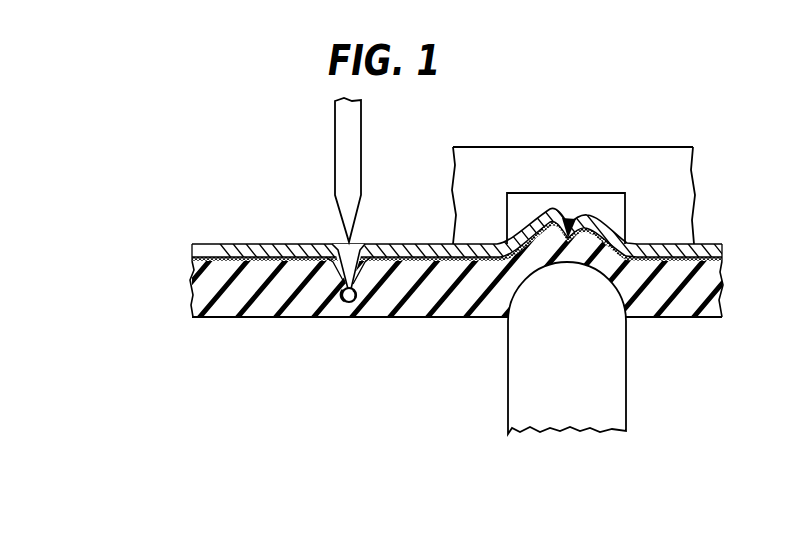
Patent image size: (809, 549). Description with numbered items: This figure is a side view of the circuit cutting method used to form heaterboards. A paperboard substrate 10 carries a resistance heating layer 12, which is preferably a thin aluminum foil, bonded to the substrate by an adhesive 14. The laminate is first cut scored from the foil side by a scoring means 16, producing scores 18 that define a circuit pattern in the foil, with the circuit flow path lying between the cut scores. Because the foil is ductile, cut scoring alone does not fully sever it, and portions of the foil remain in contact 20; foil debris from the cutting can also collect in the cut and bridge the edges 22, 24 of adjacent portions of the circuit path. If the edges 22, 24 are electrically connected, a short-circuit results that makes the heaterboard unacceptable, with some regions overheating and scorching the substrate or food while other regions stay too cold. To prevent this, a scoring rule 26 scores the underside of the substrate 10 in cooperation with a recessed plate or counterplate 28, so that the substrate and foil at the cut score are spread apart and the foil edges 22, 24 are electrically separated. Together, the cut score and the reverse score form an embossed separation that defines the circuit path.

The paperboard substrate 10 is at (263, 302).
The resistance heating layer 12 is at (206, 243).
The adhesive 14 is at (192, 258).
The scoring means 16 is at (363, 112).
The scores 18 is at (360, 297).
The portions of the foil remaining in contact 20 is at (340, 297).
The edge of adjacent circuit portion 22 is at (338, 238).
The edge of adjacent circuit portion 24 is at (360, 238).
The scoring rule 26 is at (614, 335).
The recessed plate or counterplate 28 is at (652, 165).